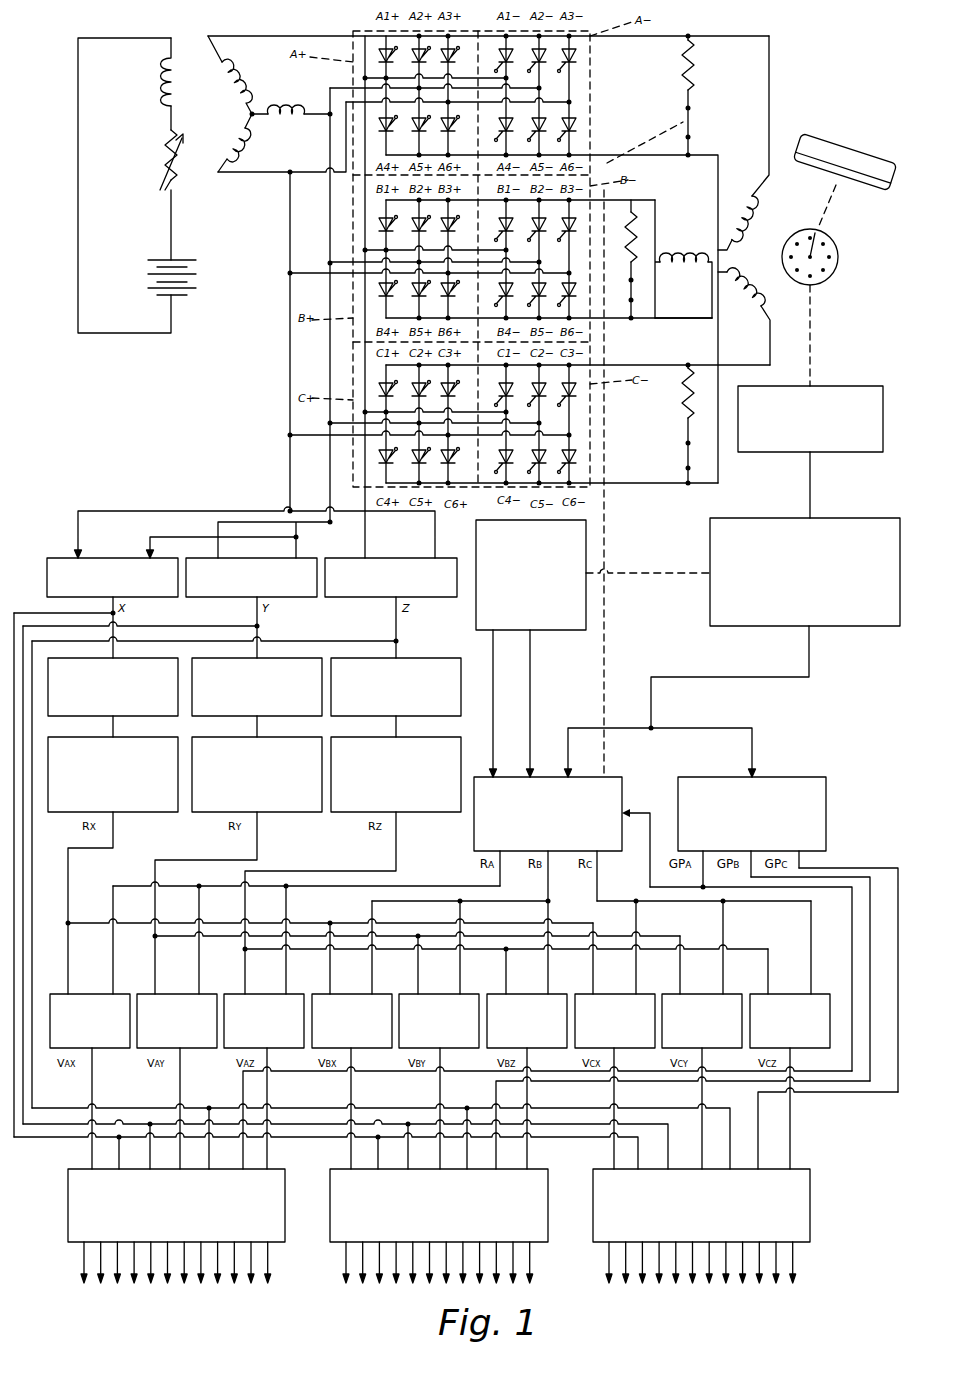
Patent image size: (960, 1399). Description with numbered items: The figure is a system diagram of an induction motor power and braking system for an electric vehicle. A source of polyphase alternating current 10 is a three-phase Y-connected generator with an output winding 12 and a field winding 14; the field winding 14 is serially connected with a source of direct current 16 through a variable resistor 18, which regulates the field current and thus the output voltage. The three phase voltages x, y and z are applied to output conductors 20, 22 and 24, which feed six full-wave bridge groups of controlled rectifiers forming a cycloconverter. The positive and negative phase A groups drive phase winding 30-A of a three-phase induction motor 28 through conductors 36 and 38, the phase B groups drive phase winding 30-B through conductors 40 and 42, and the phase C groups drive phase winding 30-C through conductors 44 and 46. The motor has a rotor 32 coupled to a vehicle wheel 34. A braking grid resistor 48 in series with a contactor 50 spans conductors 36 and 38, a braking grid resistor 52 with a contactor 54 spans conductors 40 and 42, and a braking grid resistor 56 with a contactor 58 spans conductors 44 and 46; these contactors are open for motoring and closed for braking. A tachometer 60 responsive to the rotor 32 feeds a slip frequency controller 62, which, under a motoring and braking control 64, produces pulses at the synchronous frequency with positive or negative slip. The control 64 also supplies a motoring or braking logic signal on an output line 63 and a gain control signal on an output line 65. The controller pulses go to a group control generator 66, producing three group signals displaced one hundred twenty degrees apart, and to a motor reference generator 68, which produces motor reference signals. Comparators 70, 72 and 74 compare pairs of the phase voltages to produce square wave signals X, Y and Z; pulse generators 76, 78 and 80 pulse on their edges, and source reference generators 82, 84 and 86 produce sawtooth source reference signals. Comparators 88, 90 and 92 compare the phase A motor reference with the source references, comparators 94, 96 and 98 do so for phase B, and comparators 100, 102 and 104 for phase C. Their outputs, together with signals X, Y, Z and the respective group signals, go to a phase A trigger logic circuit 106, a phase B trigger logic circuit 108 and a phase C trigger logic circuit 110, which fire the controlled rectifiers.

The source of polyphase alternating current 10 is at (203, 192).
The output winding 12 is at (235, 115).
The field winding 14 is at (163, 84).
The source of direct current 16 is at (160, 260).
The variable resistor 18 is at (166, 156).
The output conductor 20 is at (232, 36).
The output conductor 22 is at (318, 118).
The output conductor 24 is at (248, 174).
The three-phase induction motor 28 is at (765, 216).
The phase winding 30-A is at (743, 212).
The phase winding 30-B is at (683, 268).
The phase winding 30-C is at (746, 288).
The rotor 32 is at (835, 276).
The vehicle wheel 34 is at (858, 162).
The conductor 36 is at (685, 36).
The conductor 38 is at (610, 150).
The conductor 40 is at (656, 246).
The conductor 42 is at (636, 322).
The conductor 44 is at (655, 366).
The conductor 46 is at (622, 482).
The braking grid resistor 48 is at (680, 62).
The contactor 50 is at (690, 137).
The braking grid resistor 52 is at (640, 222).
The contactor 54 is at (638, 292).
The braking grid resistor 56 is at (684, 410).
The contactor 58 is at (692, 468).
The tachometer 60 is at (838, 388).
The slip frequency controller 62 is at (845, 520).
The output line 63 is at (496, 652).
The motoring and braking control 64 is at (586, 528).
The output line 65 is at (532, 722).
The group control generator 66 is at (806, 780).
The motor reference generator 68 is at (605, 785).
The comparator 70 is at (130, 560).
The comparator 72 is at (225, 562).
The comparator 74 is at (392, 562).
The pulse generator 76 is at (163, 664).
The pulse generator 78 is at (307, 672).
The pulse generator 80 is at (446, 665).
The source reference generator 82 is at (146, 803).
The source reference generator 84 is at (287, 803).
The source reference generator 86 is at (427, 803).
The comparator 88 is at (96, 998).
The comparator 90 is at (178, 1000).
The comparator 92 is at (240, 1000).
The comparator 94 is at (323, 1000).
The comparator 96 is at (433, 1000).
The comparator 98 is at (528, 1000).
The comparator 100 is at (612, 1000).
The comparator 102 is at (702, 1000).
The comparator 104 is at (790, 1000).
The phase A trigger logic circuit 106 is at (90, 1182).
The phase B trigger logic circuit 108 is at (352, 1182).
The phase C trigger logic circuit 110 is at (806, 1170).